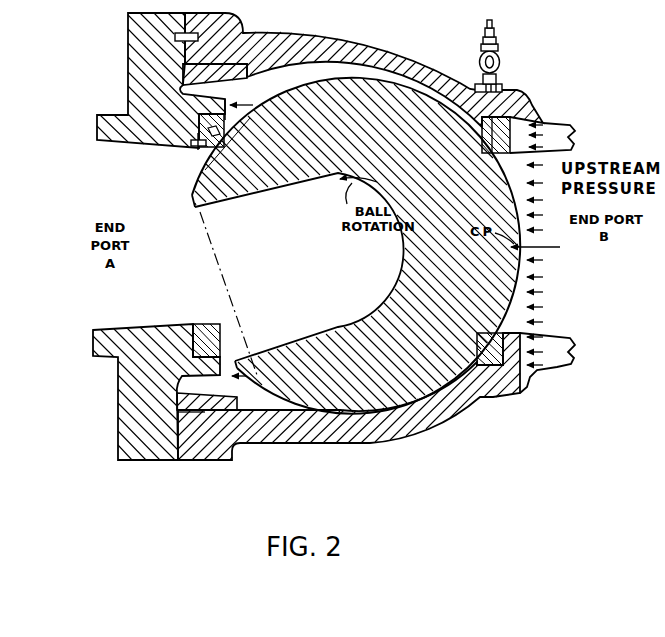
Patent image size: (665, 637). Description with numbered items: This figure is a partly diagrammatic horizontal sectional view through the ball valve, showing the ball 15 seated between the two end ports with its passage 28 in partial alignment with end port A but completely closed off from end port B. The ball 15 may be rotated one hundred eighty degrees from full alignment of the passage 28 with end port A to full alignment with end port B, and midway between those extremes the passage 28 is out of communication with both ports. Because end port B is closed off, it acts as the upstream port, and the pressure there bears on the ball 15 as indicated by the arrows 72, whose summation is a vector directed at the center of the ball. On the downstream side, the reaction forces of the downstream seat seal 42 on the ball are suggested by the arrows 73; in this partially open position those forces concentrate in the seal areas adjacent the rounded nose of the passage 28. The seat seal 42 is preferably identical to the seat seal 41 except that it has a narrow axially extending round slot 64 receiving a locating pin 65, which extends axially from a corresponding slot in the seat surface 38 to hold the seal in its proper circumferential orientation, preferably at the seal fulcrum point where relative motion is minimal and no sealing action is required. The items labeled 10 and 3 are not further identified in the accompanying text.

The clearance gap 3 is at (239, 241).
The valve body 10 is at (403, 52).
The ball 15 is at (370, 326).
The passage 28 is at (289, 259).
The seat surface 38 is at (186, 341).
The seat seal 41 is at (478, 398).
The seat seal 42 is at (204, 328).
The round slot 64 is at (200, 117).
The locating pin 65 is at (190, 147).
The arrows 72 is at (565, 141).
The arrows 73 is at (209, 139).